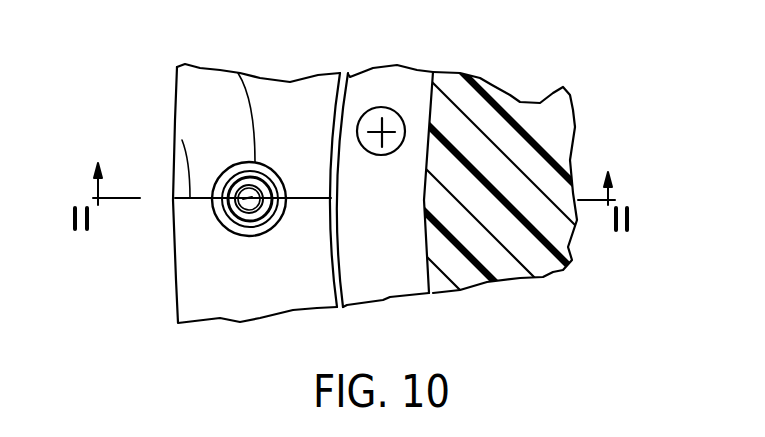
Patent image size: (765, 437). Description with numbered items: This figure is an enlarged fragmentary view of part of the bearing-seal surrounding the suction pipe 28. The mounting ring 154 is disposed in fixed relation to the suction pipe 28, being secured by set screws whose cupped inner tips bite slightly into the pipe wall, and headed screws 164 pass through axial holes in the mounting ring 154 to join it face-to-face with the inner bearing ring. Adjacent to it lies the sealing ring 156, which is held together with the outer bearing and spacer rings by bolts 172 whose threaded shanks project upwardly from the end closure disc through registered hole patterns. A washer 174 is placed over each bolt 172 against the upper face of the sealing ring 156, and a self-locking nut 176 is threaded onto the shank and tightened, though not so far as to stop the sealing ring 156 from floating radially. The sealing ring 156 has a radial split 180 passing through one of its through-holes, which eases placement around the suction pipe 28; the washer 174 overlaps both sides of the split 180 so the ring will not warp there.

The suction pipe 28 is at (548, 122).
The mounting ring 154 is at (375, 87).
The sealing ring 156 is at (303, 107).
The headed screw 164 is at (407, 110).
The bolt 172 is at (228, 213).
The washer 174 is at (238, 73).
The self-locking nut 176 is at (238, 223).
The radial split 180 is at (182, 140).